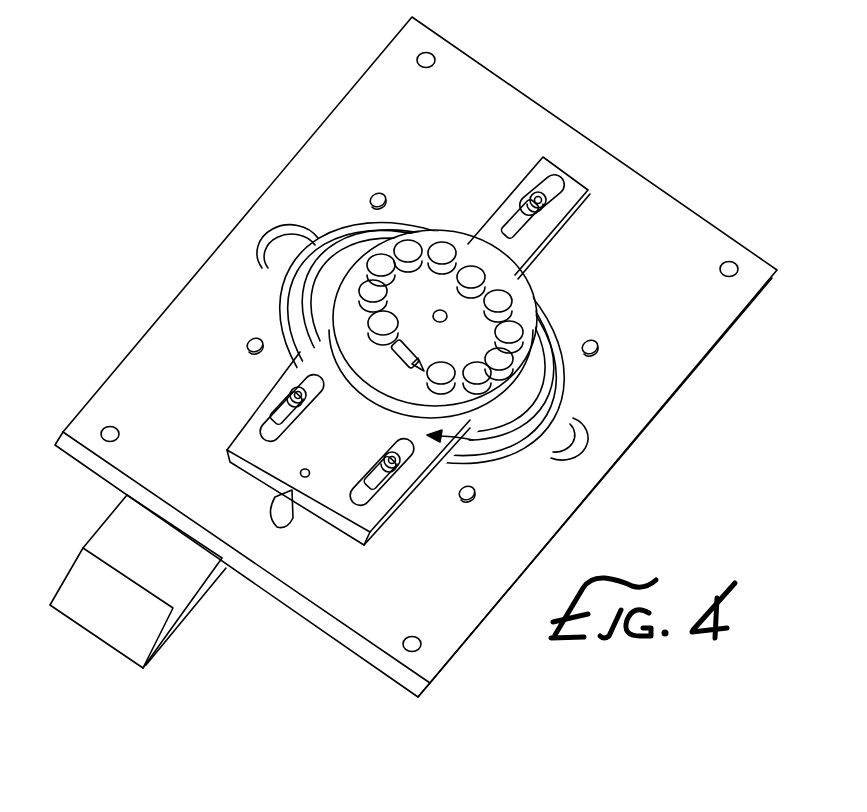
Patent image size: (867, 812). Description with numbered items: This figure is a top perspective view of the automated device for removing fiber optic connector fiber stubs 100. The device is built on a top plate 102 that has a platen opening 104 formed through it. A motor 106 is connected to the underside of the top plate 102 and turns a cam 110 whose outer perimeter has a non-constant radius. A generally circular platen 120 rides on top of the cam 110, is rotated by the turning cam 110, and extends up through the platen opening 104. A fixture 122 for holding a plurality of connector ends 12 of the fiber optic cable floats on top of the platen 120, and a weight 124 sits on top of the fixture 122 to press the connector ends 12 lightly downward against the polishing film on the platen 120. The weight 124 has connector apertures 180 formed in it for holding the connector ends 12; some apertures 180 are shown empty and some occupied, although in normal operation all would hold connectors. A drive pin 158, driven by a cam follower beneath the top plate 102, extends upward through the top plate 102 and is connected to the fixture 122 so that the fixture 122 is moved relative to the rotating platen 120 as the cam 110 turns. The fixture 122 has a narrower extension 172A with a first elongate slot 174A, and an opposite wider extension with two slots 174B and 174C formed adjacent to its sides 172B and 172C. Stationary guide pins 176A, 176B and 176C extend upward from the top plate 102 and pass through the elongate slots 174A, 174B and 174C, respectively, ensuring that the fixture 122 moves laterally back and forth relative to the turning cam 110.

The automated device for removing fiber optic connector fiber stubs 100 is at (100, 330).
The top plate 102 is at (110, 412).
The platen opening 104 is at (288, 257).
The motor 106 is at (107, 617).
The cam 110 is at (300, 313).
The connector ends 12 is at (377, 256).
The platen 120 is at (537, 422).
The fixture 122 is at (473, 440).
The weight 124 is at (427, 232).
The drive pin 158 is at (288, 496).
The narrower extension 172A is at (563, 180).
The side of wider extension 172B is at (418, 485).
The side of wider extension 172C is at (287, 387).
The first elongate slot 174A is at (543, 253).
The elongate slot 174B is at (370, 495).
The elongate slot 174C is at (273, 437).
The stationary guide pin 176A is at (537, 200).
The stationary guide pin 176B is at (400, 470).
The stationary guide pin 176C is at (290, 410).
The connector apertures 180 is at (505, 300).